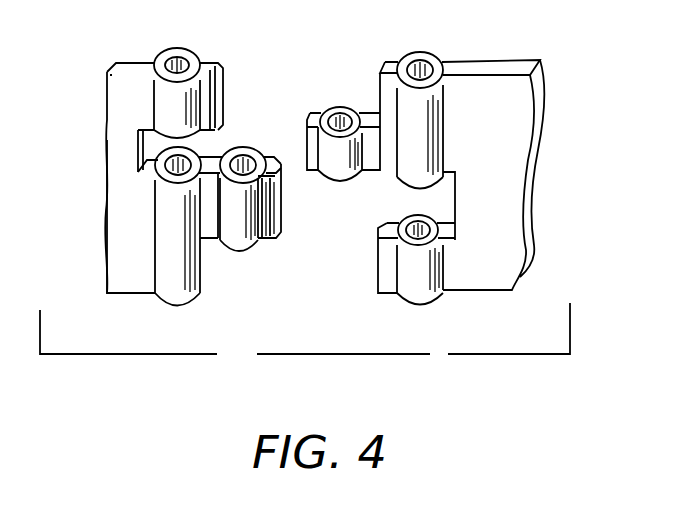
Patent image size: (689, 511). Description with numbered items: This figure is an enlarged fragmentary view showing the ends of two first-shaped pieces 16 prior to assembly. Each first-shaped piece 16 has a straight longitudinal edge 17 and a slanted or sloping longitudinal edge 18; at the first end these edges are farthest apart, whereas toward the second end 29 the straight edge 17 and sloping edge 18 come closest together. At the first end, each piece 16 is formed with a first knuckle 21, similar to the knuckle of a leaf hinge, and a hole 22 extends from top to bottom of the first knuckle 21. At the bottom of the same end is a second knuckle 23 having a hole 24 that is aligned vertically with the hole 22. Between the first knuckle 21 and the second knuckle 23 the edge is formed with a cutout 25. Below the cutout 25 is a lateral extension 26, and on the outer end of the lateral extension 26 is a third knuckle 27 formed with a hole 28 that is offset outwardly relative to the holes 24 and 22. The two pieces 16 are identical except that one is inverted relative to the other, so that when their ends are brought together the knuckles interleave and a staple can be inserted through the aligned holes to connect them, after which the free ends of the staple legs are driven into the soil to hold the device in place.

The first-shaped piece 16 is at (117, 120).
The straight longitudinal edge 17 is at (137, 88).
The slanted or sloping longitudinal edge 18 is at (468, 67).
The first knuckle 21 is at (175, 297).
The hole 22 is at (156, 178).
The second knuckle 23 is at (182, 97).
The hole 24 is at (175, 67).
The cutout 25 is at (141, 129).
The lateral extension 26 is at (208, 228).
The third knuckle 27 is at (238, 235).
The hole 28 is at (240, 167).
The second end 29 is at (122, 240).